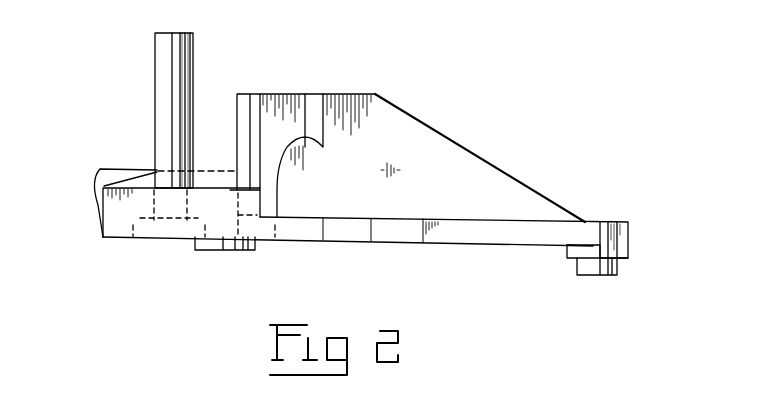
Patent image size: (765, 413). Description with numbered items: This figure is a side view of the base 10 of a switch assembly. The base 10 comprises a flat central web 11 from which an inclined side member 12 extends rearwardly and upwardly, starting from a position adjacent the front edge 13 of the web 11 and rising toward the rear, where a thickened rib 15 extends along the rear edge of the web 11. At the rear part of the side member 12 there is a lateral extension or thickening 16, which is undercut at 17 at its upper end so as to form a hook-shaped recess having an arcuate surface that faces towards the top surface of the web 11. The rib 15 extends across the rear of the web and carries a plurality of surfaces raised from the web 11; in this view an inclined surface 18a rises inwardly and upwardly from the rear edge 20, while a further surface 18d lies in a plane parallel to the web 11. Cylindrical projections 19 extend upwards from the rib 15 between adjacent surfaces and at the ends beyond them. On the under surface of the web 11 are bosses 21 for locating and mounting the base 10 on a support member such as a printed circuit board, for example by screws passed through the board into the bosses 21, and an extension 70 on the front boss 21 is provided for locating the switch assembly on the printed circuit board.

The base 10 is at (100, 242).
The flat central web 11 is at (547, 222).
The inclined side member 12 is at (460, 158).
The front edge 13 is at (628, 237).
The thickened rib 15 is at (107, 153).
The lateral extension 16 is at (293, 100).
The undercut 17 is at (307, 142).
The inclined surface 18a is at (100, 169).
The parallel surface 18d is at (140, 167).
The cylindrical projection 19 is at (183, 33).
The rear edge 20 is at (100, 197).
The boss 21 is at (213, 250).
The extension 70 is at (617, 277).